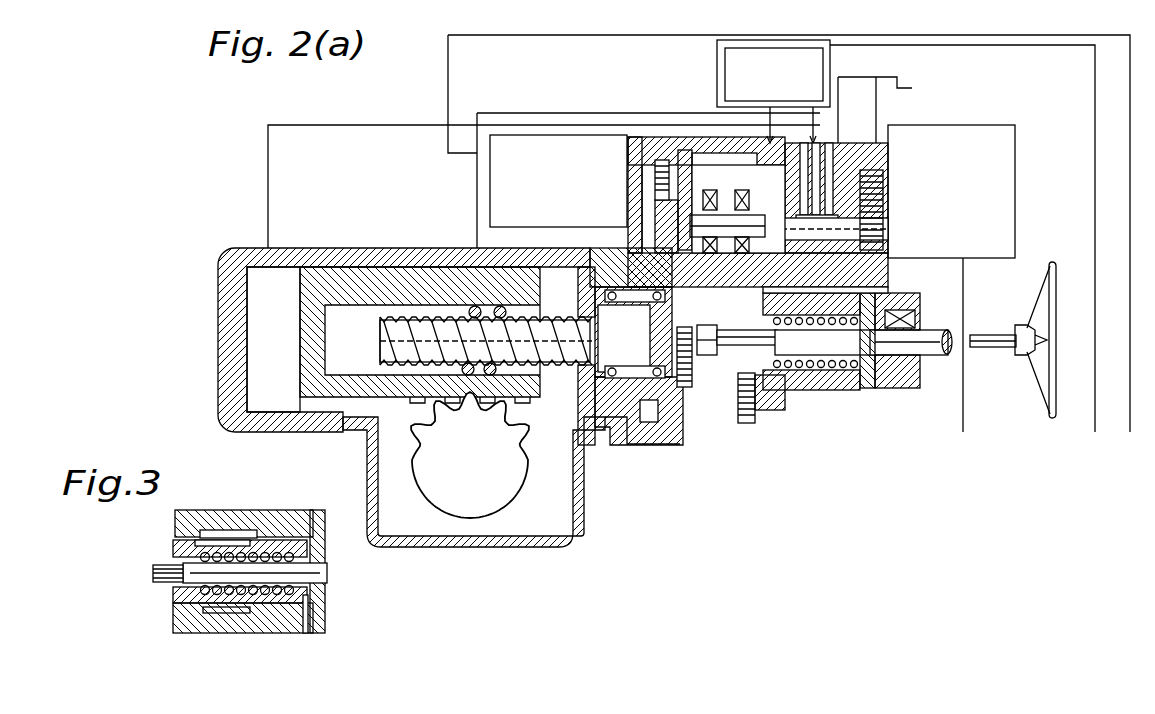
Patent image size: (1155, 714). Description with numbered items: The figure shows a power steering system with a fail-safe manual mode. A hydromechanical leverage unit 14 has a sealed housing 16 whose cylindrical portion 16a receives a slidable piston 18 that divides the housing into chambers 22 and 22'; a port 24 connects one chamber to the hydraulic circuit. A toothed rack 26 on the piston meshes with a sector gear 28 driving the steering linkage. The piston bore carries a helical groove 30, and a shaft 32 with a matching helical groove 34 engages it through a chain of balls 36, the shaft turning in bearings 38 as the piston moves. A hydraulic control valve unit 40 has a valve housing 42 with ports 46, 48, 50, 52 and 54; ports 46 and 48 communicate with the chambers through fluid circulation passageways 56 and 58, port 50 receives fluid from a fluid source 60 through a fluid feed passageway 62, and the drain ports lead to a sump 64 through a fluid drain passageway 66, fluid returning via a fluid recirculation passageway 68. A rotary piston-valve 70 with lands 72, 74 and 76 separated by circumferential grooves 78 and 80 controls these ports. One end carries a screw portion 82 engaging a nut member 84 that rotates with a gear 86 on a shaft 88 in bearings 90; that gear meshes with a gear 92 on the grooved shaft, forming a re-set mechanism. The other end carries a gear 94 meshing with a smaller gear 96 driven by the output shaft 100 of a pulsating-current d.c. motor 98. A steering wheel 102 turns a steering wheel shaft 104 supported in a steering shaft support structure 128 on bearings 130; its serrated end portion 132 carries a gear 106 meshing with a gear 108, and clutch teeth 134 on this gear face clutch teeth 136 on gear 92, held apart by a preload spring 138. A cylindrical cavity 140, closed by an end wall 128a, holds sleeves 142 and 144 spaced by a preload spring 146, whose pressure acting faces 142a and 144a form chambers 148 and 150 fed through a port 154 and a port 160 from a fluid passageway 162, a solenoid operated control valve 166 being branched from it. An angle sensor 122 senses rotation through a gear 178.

In FIG. 2A, the hydromechanical leverage unit 14 is at (298, 230).
In FIG. 2A, the housing 16 is at (350, 432).
In FIG. 2A, the cylindrical portion 16a is at (330, 250).
In FIG. 2A, the piston 18 is at (355, 262).
In FIG. 2A, the chamber 22 is at (417, 368).
In FIG. 2A, the chamber 22' is at (564, 280).
In FIG. 2A, the port 24 is at (270, 262).
In FIG. 2A, the toothed rack 26 is at (372, 432).
In FIG. 2A, the sector gear 28 is at (432, 490).
In FIG. 2A, the helical groove 30 is at (430, 262).
In FIG. 2A, the shaft 32 is at (600, 420).
In FIG. 2A, the helical groove 34 is at (400, 305).
In FIG. 2A, the balls 36 is at (448, 262).
In FIG. 2A, the bearings 38 is at (650, 445).
In FIG. 2A, the hydraulic control valve unit 40 is at (740, 160).
In FIG. 2A, the valve housing 42 is at (945, 300).
In FIG. 2A, the port 46 is at (796, 190).
In FIG. 2A, the port 48 is at (850, 160).
In FIG. 2A, the port 50 is at (875, 110).
In FIG. 2A, the port 52 is at (850, 150).
In FIG. 2A, the port 54 is at (850, 262).
In FIG. 2A, the fluid circulation passageway 56 is at (395, 125).
In FIG. 2A, the fluid circulation passageway 58 is at (550, 113).
In FIG. 2A, the fluid source 60 is at (725, 55).
In FIG. 2A, the fluid feed passageway 62 is at (760, 165).
In FIG. 2A, the sump 64 is at (912, 88).
In FIG. 2A, the fluid drain passageway 66 is at (858, 77).
In FIG. 2A, the fluid recirculation passageway 68 is at (895, 85).
In FIG. 2A, the rotary piston-valve 70 is at (963, 290).
In FIG. 2A, the land 72 is at (870, 175).
In FIG. 2A, the land 74 is at (888, 238).
In FIG. 2A, the land 76 is at (888, 212).
In FIG. 2A, the circumferential groove 78 is at (940, 258).
In FIG. 2A, the circumferential groove 80 is at (888, 224).
In FIG. 2A, the screw portion 82 is at (690, 160).
In FIG. 2A, the nut member 84 is at (670, 150).
In FIG. 2A, the gear 86 is at (658, 160).
In FIG. 2A, the shaft 88 is at (642, 205).
In FIG. 2A, the bearings 90 is at (690, 327).
In FIG. 2A, the gear 92 is at (705, 355).
In FIG. 2A, the gear 94 is at (905, 258).
In FIG. 2A, the gear 96 is at (865, 160).
In FIG. 2A, the pulsating-current d.c. motor 98 is at (1015, 133).
In FIG. 2A, the output shaft 100 is at (880, 150).
In FIG. 2A, the steering wheel 102 is at (1080, 285).
In FIG. 2A, the steering wheel shaft 104 is at (955, 355).
In FIG. 3, the steering wheel shaft 104 is at (325, 585).
In FIG. 2A, the gear 106 is at (746, 423).
In FIG. 2A, the gear 108 is at (765, 410).
In FIG. 2A, the angle sensor 122 is at (490, 178).
In FIG. 2A, the steering shaft support structure 128 is at (985, 320).
In FIG. 3, the steering shaft support structure 128 is at (201, 500).
In FIG. 2A, the end wall 128a is at (868, 390).
In FIG. 3, the end wall 128a is at (315, 522).
In FIG. 2A, the bearings 130 is at (885, 370).
In FIG. 2A, the leading end axial portion 132 is at (730, 350).
In FIG. 2A, the clutch teeth 134 is at (742, 430).
In FIG. 2A, the clutch teeth 136 is at (720, 360).
In FIG. 2A, the preload spring 138 is at (633, 332).
In FIG. 2A, the cylindrical cavity 140 is at (890, 285).
In FIG. 3, the cylindrical cavity 140 is at (250, 620).
In FIG. 2A, the sleeve 142 is at (828, 392).
In FIG. 3, the sleeve 142 is at (300, 633).
In FIG. 2A, the pressure acting face 142a is at (900, 390).
In FIG. 3, the pressure acting face 142a is at (325, 612).
In FIG. 2A, the sleeve 144 is at (805, 390).
In FIG. 3, the sleeve 144 is at (228, 510).
In FIG. 2A, the pressure acting face 144a is at (812, 392).
In FIG. 3, the pressure acting face 144a is at (260, 510).
In FIG. 2A, the preload spring 146 is at (795, 392).
In FIG. 3, the preload spring 146 is at (185, 545).
In FIG. 2A, the chamber 148 is at (840, 392).
In FIG. 3, the chamber 148 is at (325, 550).
In FIG. 2A, the chamber 150 is at (825, 342).
In FIG. 3, the chamber 150 is at (215, 630).
In FIG. 2A, the port 154 is at (860, 392).
In FIG. 3, the port 154 is at (308, 620).
In FIG. 2A, the port 160 is at (1140, 432).
In FIG. 3, the port 160 is at (225, 625).
In FIG. 2A, the fluid passageway 162 is at (1095, 200).
In FIG. 2A, the solenoid operated control valve 166 is at (540, 547).
In FIG. 2A, the gear 178 is at (640, 175).